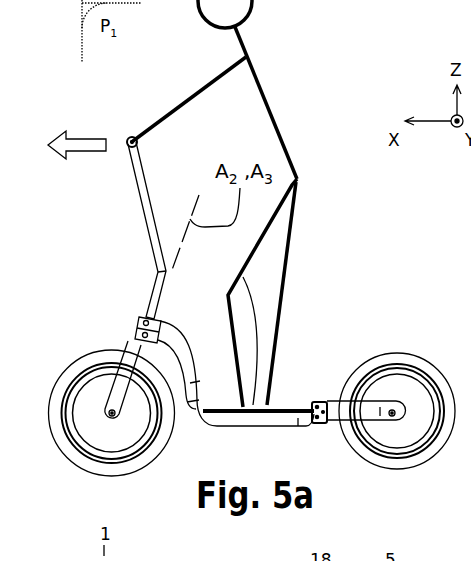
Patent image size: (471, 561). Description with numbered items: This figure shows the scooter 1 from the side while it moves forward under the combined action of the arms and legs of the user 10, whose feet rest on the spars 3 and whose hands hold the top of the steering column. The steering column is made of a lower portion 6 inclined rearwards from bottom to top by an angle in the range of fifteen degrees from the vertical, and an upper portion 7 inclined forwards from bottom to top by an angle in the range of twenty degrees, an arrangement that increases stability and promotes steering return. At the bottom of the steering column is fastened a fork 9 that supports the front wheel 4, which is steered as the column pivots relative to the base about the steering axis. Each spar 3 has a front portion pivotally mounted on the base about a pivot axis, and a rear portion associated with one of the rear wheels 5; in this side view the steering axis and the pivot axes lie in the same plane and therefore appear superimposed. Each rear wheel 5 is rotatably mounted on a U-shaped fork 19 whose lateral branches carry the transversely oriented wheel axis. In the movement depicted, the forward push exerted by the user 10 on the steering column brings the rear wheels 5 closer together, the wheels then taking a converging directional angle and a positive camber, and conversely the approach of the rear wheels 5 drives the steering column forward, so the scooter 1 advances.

The scooter 1 is at (96, 226).
The spar 3 is at (205, 360).
The front wheel 4 is at (63, 440).
The rear wheel 5 is at (428, 457).
The lower portion 6 is at (163, 313).
The upper portion 7 is at (143, 156).
The fork 9 is at (108, 394).
The user 10 is at (266, 100).
The U-shaped fork 19 is at (372, 440).